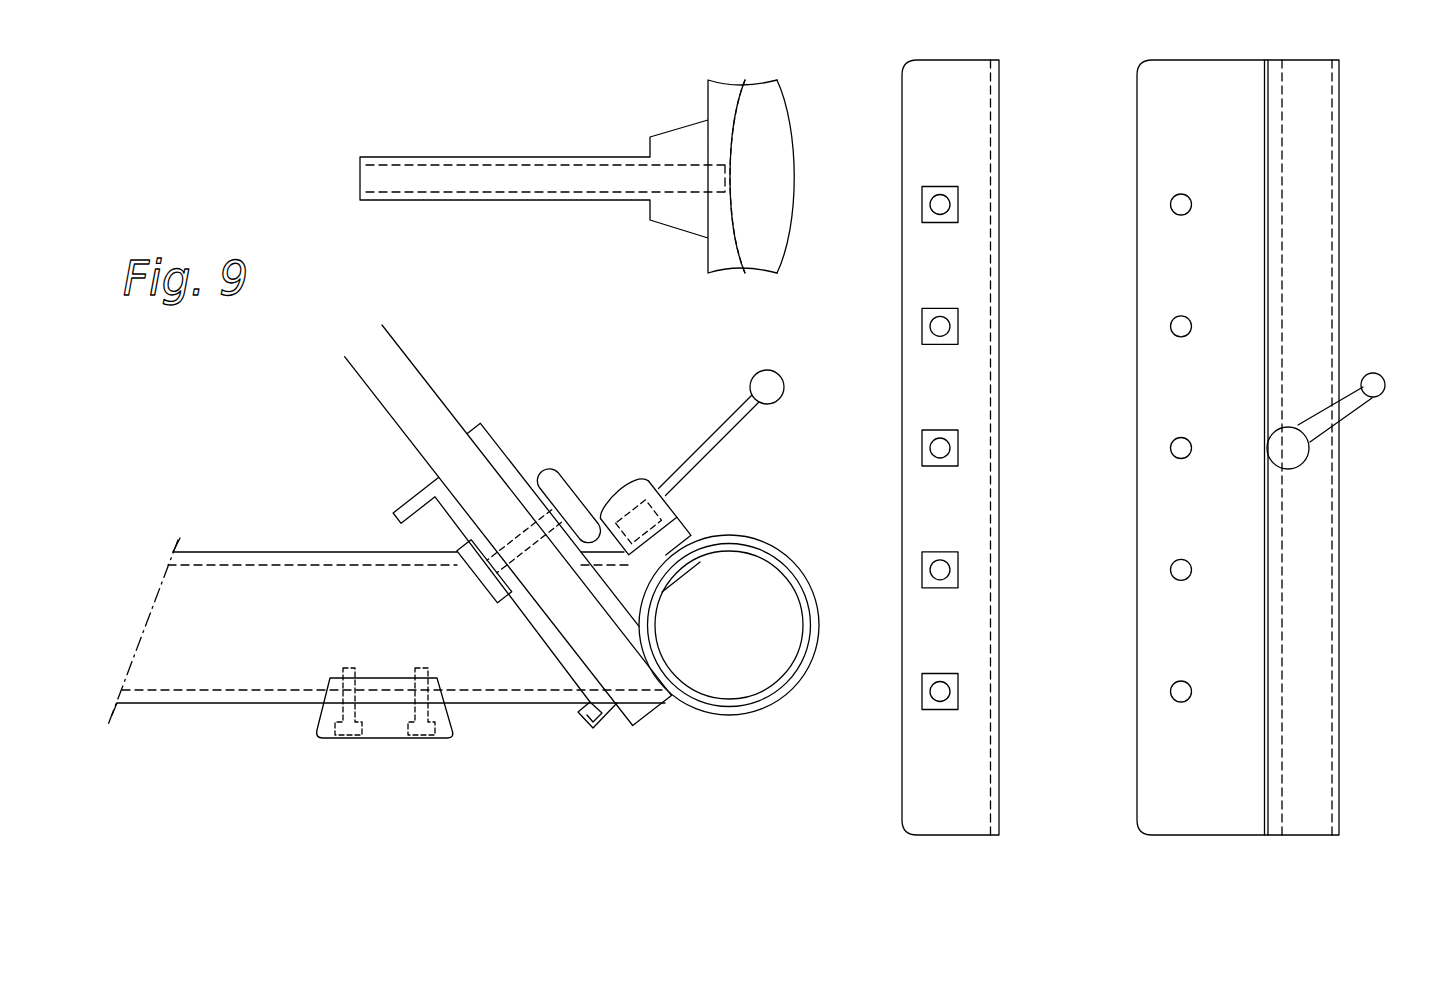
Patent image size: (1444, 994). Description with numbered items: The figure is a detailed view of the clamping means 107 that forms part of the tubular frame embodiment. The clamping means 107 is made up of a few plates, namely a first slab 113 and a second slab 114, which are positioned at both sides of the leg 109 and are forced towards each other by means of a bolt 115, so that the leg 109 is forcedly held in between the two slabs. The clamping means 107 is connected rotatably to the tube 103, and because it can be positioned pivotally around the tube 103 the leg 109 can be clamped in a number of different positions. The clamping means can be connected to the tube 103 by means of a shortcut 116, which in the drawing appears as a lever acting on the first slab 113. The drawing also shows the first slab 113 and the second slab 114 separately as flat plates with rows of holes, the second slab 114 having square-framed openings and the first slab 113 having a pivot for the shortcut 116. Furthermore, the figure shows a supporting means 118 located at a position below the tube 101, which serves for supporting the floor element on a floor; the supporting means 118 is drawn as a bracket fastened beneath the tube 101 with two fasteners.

The tube 101 is at (233, 663).
The tube 103 is at (777, 690).
The clamping means 107 is at (632, 377).
The leg 109 is at (416, 366).
The first slab 113 is at (495, 453).
The second slab 114 is at (452, 510).
The bolt 115 is at (573, 500).
The shortcut 116 is at (707, 506).
The supporting means 118 is at (443, 727).